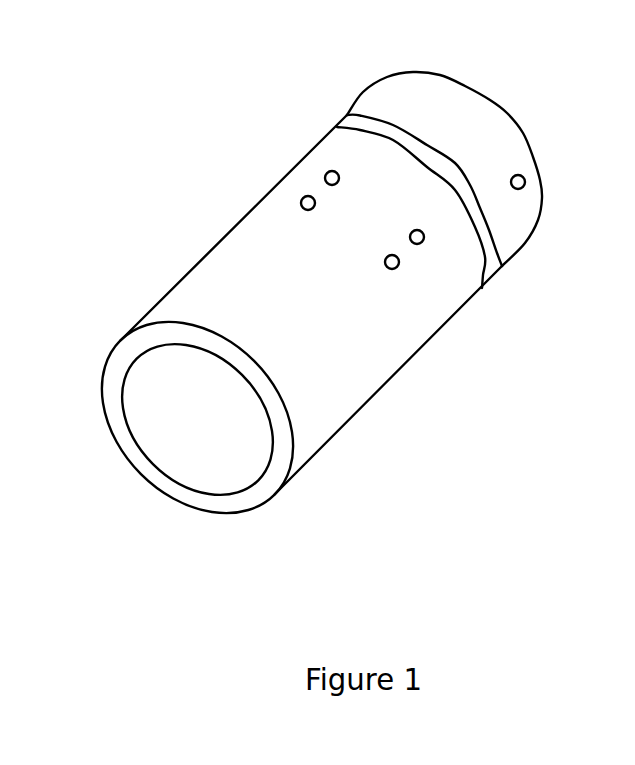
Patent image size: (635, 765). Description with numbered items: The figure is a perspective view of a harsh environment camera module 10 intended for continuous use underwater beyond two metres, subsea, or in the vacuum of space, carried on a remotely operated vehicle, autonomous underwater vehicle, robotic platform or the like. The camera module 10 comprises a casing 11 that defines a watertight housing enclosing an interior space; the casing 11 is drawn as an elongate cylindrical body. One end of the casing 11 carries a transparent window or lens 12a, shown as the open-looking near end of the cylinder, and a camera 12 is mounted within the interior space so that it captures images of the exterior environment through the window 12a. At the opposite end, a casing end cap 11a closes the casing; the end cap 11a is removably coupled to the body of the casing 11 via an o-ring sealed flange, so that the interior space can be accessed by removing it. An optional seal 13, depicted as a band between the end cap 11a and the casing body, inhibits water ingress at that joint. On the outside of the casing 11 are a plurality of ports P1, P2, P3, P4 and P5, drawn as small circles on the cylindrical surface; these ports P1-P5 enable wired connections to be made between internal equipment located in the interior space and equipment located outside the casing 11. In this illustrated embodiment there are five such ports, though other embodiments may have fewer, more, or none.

The camera module 10 is at (168, 104).
The casing 11 is at (190, 270).
The casing end cap 11a is at (500, 145).
The camera 12 is at (192, 423).
The transparent window or lens 12a is at (257, 473).
The seal 13 is at (490, 240).
The port P1 is at (303, 195).
The port P2 is at (331, 171).
The port P3 is at (392, 269).
The port P4 is at (417, 244).
The port P5 is at (525, 180).